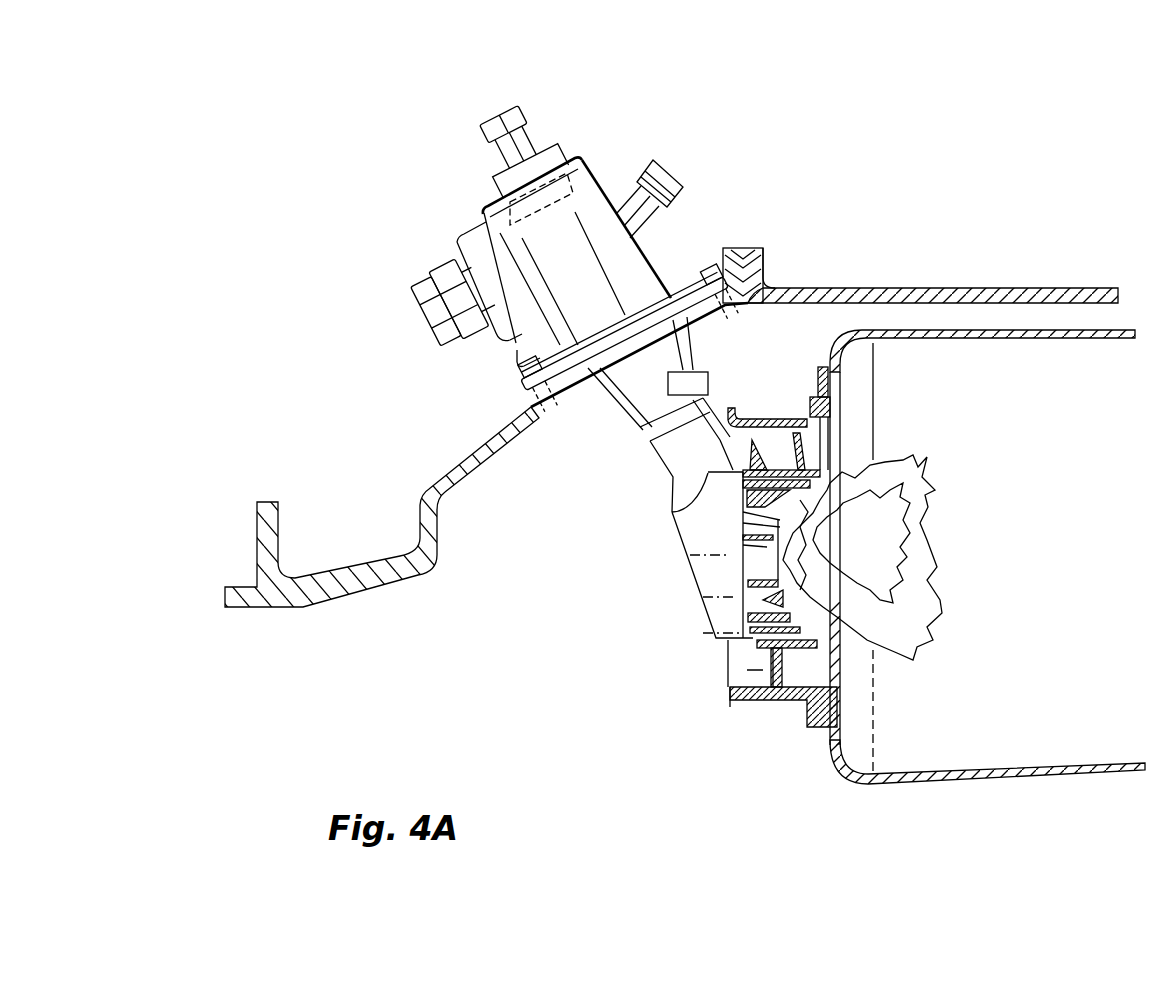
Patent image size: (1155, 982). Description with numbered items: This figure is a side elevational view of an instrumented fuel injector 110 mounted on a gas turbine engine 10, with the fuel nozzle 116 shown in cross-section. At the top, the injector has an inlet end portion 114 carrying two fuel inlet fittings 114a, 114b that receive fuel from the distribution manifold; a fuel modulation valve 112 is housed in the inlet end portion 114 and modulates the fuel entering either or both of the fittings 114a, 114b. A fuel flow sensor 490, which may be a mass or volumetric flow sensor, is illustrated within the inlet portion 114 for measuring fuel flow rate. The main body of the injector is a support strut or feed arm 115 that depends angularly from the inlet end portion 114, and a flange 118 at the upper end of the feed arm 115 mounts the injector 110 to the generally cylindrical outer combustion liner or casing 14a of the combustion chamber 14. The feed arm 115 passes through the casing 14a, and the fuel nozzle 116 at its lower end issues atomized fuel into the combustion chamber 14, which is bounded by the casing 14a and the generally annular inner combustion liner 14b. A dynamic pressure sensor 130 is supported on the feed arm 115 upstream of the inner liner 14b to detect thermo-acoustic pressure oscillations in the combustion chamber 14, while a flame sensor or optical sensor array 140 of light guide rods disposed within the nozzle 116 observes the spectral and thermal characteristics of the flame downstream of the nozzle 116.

The gas turbine engine 10 is at (1022, 150).
The combustion chamber 14 is at (433, 477).
The outer combustion liner or casing 14a is at (845, 288).
The inner combustion liner 14b is at (1023, 330).
The instrumented fuel injector 110 is at (581, 146).
The fuel modulation valve 112 is at (470, 242).
The inlet end portion 114 is at (592, 163).
The fuel inlet fitting 114a is at (497, 127).
The fuel inlet fitting 114b is at (672, 174).
The feed arm 115 is at (667, 447).
The fuel nozzle 116 is at (755, 697).
The flange 118 is at (578, 388).
The dynamic pressure sensor 130 is at (698, 377).
The flame sensor or optical sensor array 140 is at (774, 483).
The fuel flow sensor 490 is at (504, 206).